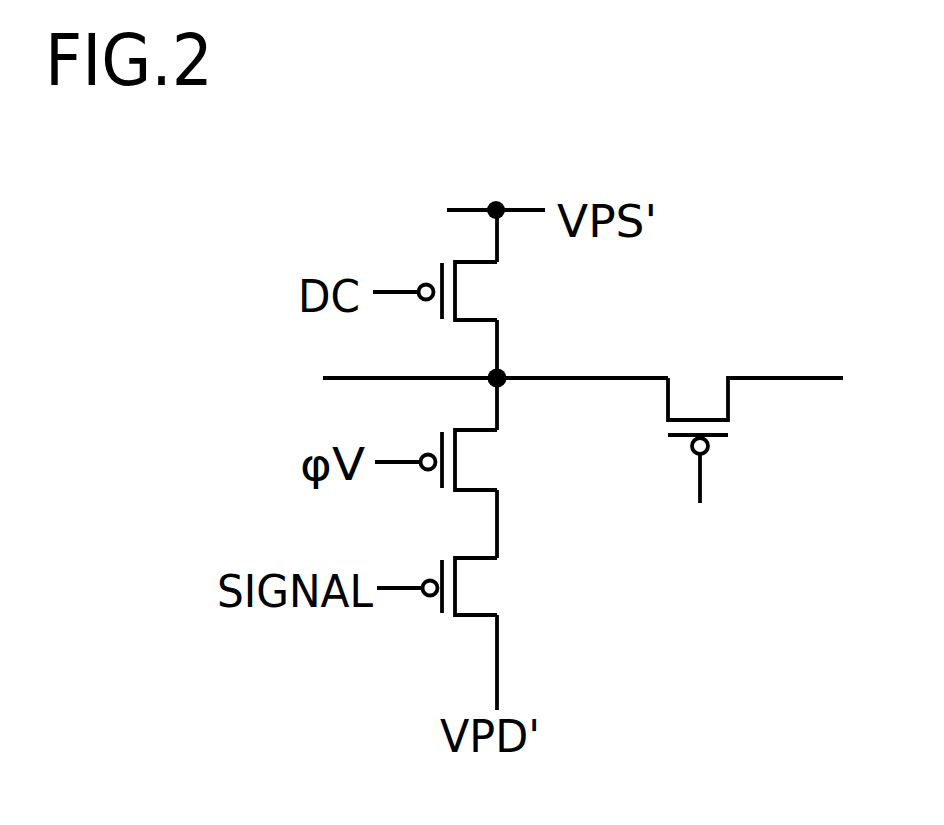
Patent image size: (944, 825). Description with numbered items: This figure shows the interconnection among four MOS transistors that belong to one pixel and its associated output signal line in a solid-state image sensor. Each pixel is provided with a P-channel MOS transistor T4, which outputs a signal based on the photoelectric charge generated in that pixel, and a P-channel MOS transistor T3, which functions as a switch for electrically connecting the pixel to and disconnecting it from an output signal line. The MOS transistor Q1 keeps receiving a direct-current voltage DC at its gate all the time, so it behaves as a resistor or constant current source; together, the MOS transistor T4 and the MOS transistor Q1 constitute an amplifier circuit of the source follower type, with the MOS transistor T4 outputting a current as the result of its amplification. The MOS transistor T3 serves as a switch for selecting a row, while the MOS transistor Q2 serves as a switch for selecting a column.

The MOS transistor Q1 is at (468, 292).
The MOS transistor Q2 is at (755, 419).
The P-channel MOS transistor T3 is at (471, 461).
The P-channel MOS transistor T4 is at (473, 587).